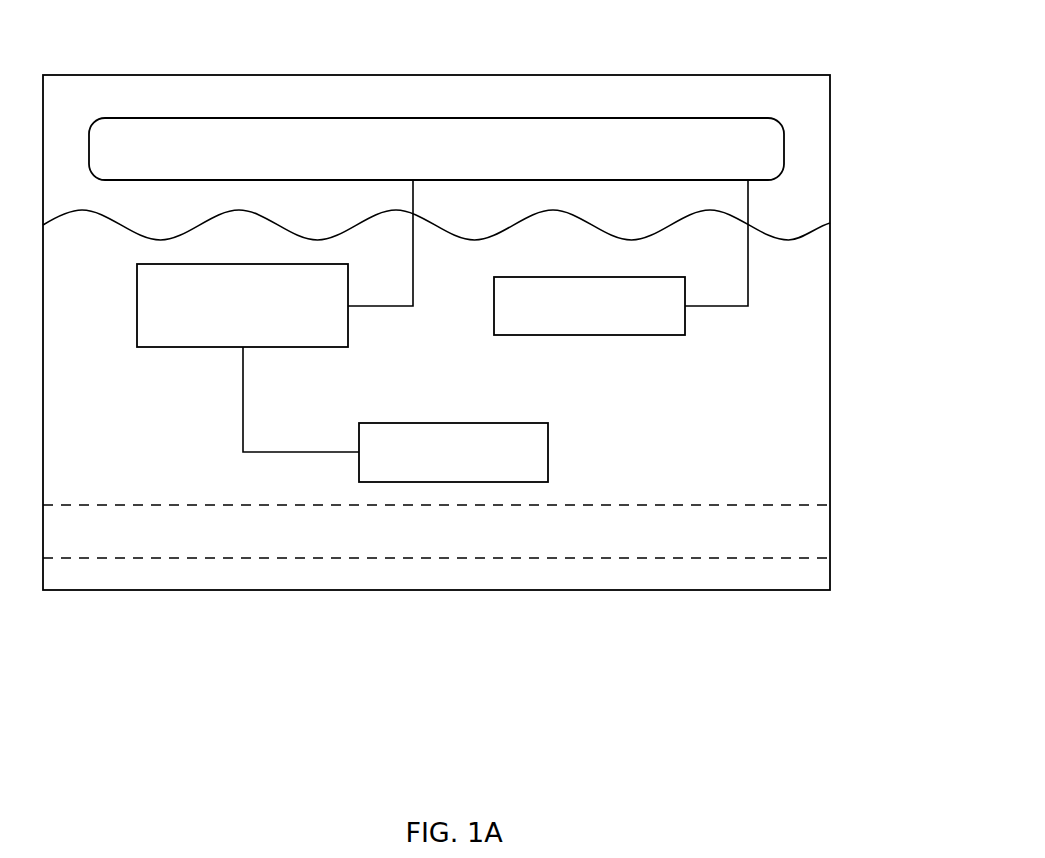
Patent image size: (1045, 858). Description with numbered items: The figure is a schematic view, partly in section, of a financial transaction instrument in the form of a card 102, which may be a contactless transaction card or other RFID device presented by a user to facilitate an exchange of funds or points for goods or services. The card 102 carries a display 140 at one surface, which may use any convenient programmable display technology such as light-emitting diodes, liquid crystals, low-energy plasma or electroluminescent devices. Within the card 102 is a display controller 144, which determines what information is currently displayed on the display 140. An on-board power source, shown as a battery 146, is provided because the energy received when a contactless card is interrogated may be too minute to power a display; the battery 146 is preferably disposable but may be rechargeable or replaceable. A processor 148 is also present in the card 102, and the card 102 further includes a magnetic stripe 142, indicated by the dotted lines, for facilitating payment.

The card 102 is at (830, 200).
The display 140 is at (567, 118).
The magnetic stripe 142 is at (720, 505).
The display controller 144 is at (278, 347).
The battery 146 is at (589, 335).
The processor 148 is at (548, 452).